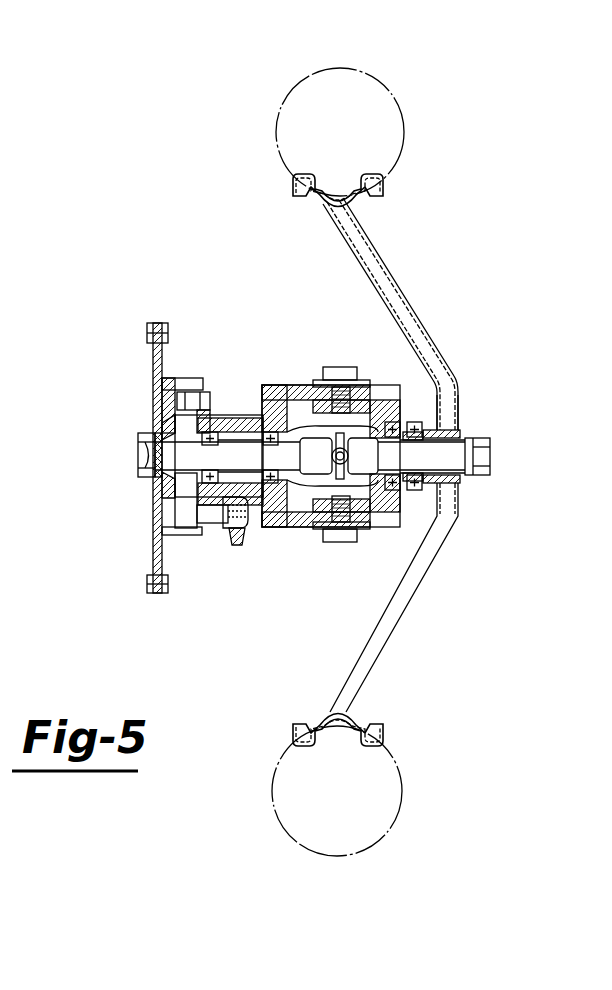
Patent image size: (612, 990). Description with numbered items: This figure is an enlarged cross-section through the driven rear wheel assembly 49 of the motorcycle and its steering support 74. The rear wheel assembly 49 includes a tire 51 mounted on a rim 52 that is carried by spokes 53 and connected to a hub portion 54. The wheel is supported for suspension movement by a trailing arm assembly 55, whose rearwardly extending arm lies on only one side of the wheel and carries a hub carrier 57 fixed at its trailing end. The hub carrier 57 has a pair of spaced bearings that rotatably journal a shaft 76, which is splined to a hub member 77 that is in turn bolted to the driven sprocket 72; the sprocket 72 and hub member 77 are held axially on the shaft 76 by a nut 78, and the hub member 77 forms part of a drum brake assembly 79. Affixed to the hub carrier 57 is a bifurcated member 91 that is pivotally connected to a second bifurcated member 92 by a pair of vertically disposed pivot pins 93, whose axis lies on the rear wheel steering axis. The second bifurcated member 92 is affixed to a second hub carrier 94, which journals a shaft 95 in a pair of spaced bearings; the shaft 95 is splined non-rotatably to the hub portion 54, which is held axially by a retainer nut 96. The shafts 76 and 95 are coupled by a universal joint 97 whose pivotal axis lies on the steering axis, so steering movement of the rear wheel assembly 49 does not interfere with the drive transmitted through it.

The rear wheel assembly 49 is at (413, 299).
The tire 51 is at (383, 83).
The rim 52 is at (390, 184).
The spokes 53 is at (441, 367).
The hub portion 54 is at (460, 487).
The trailing arm assembly 55 is at (230, 413).
The hub carrier 57 is at (243, 418).
The driven sprocket 72 is at (152, 570).
The steering support 74 is at (307, 325).
The shaft 76 is at (157, 478).
The hub member 77 is at (156, 506).
The nut 78 is at (145, 435).
The drum brake assembly 79 is at (178, 370).
The bifurcated member 91 is at (297, 387).
The second bifurcated member 92 is at (378, 421).
The pivot pins 93 is at (342, 367).
The second hub carrier 94 is at (397, 507).
The shaft 95 is at (447, 452).
The retainer nut 96 is at (481, 476).
The universal joint 97 is at (303, 492).